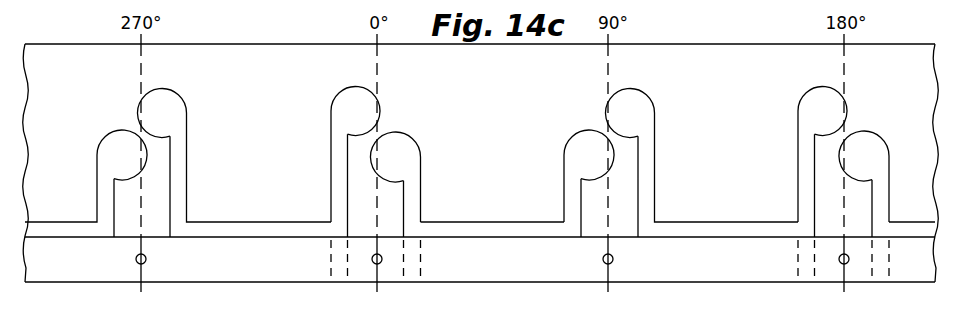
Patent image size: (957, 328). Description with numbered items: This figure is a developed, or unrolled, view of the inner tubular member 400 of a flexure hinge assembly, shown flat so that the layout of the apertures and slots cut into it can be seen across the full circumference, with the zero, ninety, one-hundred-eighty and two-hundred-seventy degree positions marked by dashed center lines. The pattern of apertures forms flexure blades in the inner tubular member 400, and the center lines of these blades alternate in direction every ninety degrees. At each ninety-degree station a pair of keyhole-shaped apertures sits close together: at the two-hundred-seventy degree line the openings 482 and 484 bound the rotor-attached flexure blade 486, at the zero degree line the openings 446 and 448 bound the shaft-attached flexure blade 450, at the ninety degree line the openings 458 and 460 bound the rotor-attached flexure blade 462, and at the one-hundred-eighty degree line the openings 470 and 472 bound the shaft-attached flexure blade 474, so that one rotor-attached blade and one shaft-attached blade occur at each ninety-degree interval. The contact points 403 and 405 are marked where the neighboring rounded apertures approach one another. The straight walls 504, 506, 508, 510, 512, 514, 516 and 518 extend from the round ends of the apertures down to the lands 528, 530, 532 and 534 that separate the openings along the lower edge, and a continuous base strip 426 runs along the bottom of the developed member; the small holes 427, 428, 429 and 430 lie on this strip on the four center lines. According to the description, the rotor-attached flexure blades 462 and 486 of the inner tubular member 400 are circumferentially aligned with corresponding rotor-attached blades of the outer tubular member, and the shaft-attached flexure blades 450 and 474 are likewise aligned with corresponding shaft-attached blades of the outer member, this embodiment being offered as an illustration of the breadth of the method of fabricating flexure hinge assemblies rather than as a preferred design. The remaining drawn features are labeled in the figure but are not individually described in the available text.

The inner tubular member 400 is at (206, 284).
The contact point 403 is at (378, 137).
The contact point 405 is at (142, 130).
The base portion 426 is at (760, 270).
The pivot pin 427 is at (137, 264).
The pivot pin 428 is at (372, 263).
The pivot pin 429 is at (613, 263).
The pivot pin 430 is at (848, 264).
The lobe 446 is at (345, 98).
The lobe 448 is at (415, 155).
The shaft-attached flexure blade 450 is at (385, 128).
The lobe 458 is at (572, 150).
The lobe 460 is at (637, 97).
The rotor-attached flexure blade 462 is at (597, 127).
The lobe 470 is at (808, 100).
The lobe 472 is at (880, 153).
The shaft-attached flexure blade 474 is at (900, 109).
The lobe 482 is at (104, 150).
The lobe 484 is at (172, 97).
The rotor-attached flexure blade 486 is at (130, 128).
The side wall 504 is at (337, 168).
The side wall 506 is at (412, 193).
The side wall 508 is at (572, 192).
The side wall 510 is at (651, 172).
The side wall 512 is at (802, 170).
The side wall 514 is at (882, 210).
The side wall 516 is at (102, 197).
The side wall 518 is at (184, 170).
The land 528 is at (504, 231).
The land 530 is at (725, 231).
The land 532 is at (68, 230).
The land 534 is at (253, 230).